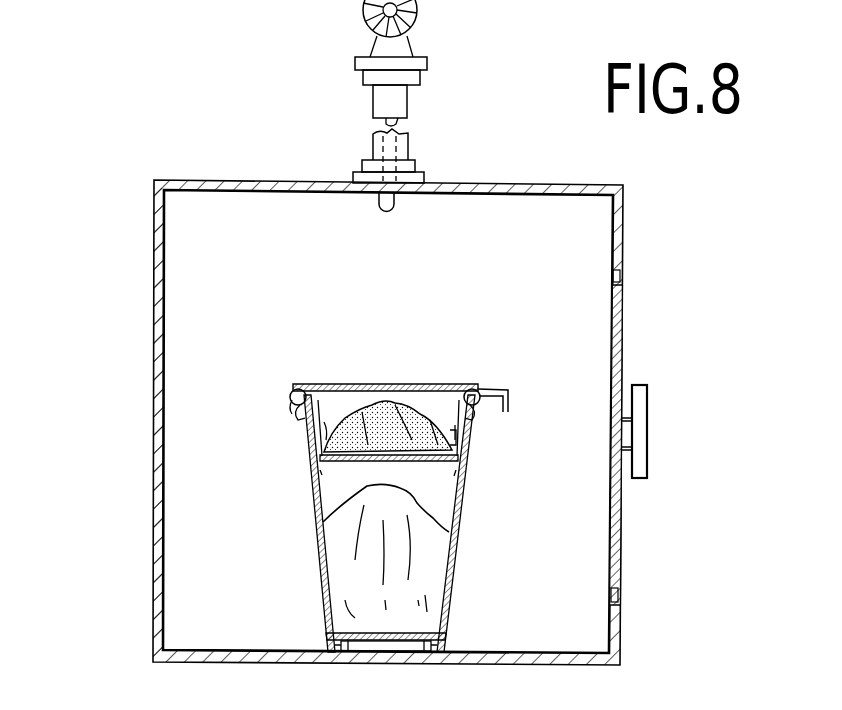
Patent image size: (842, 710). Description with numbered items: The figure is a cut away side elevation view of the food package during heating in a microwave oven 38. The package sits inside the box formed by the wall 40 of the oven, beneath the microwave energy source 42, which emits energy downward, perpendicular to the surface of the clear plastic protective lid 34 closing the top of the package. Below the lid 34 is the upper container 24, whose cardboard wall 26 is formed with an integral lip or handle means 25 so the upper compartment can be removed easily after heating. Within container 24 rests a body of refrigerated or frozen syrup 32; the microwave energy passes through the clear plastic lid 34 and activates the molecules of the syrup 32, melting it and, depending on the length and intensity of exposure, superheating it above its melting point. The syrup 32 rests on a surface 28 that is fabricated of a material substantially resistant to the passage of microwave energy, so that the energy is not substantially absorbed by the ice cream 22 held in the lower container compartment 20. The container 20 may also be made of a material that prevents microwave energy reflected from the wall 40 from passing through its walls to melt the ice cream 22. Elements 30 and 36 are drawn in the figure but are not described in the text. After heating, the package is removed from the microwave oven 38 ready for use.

The container 20 is at (440, 596).
The ice cream 22 is at (355, 583).
The container 24 is at (424, 472).
The lip or handle means 25 is at (498, 390).
The cardboard wall 26 is at (332, 388).
The surface 28 is at (341, 463).
The tray support flange 30 is at (452, 452).
The syrup 32 is at (372, 400).
The clear plastic protective lid 34 is at (418, 387).
The seal curl 36 is at (290, 393).
The microwave oven 38 is at (338, 422).
The wall 40 is at (157, 565).
The microwave energy source 42 is at (350, 101).